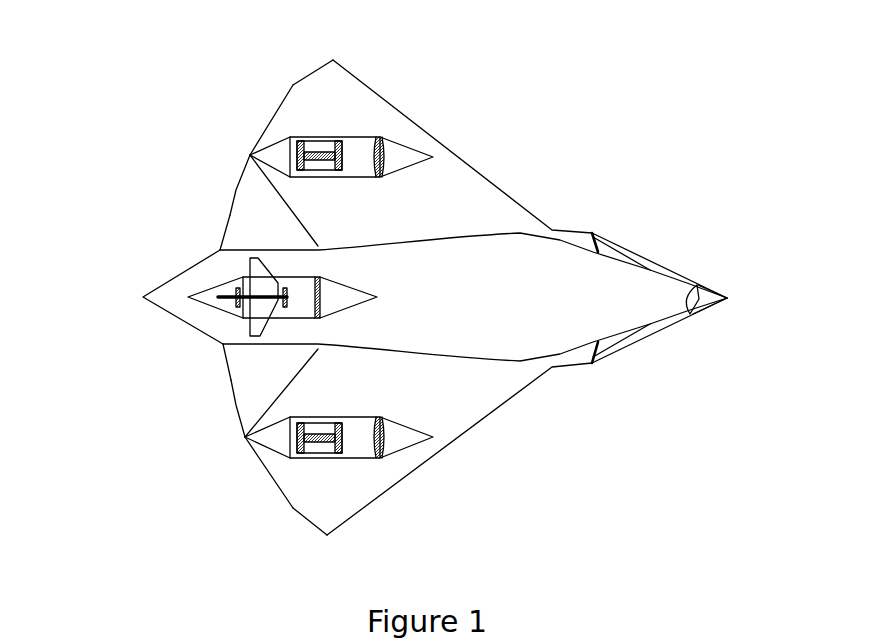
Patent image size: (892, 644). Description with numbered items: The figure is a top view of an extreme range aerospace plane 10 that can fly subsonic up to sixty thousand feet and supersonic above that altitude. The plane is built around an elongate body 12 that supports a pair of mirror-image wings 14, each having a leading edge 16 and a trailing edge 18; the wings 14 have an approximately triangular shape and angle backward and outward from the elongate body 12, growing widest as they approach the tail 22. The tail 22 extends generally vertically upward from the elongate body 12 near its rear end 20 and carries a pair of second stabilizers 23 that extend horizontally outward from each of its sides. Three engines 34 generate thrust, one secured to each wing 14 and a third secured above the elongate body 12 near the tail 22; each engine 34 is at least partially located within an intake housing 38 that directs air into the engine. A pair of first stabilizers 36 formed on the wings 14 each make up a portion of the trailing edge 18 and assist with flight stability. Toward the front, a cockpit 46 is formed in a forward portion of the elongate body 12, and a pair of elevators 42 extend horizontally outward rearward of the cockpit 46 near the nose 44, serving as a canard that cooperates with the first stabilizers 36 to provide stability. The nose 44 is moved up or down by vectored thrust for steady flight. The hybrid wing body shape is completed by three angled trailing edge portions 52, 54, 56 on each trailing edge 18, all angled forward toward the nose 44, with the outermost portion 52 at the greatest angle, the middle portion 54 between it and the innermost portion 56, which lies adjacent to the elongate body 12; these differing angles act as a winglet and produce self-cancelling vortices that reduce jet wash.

The aerospace plane 10 is at (663, 92).
The elongate body 12 is at (497, 248).
The wing 14 is at (343, 93).
The leading edge 16 is at (482, 177).
The trailing edge 18 is at (241, 170).
The rear end 20 is at (167, 289).
The tail 22 is at (243, 278).
The second stabilizer 23 is at (218, 250).
The engine 34 is at (305, 133).
The first stabilizer 36 is at (236, 220).
The intake housing 38 is at (315, 148).
The elevator 42 is at (617, 245).
The nose 44 is at (717, 302).
The cockpit 46 is at (697, 285).
The trailing edge portion 52 is at (310, 75).
The trailing edge portion 54 is at (272, 108).
The trailing edge portion 56 is at (276, 149).